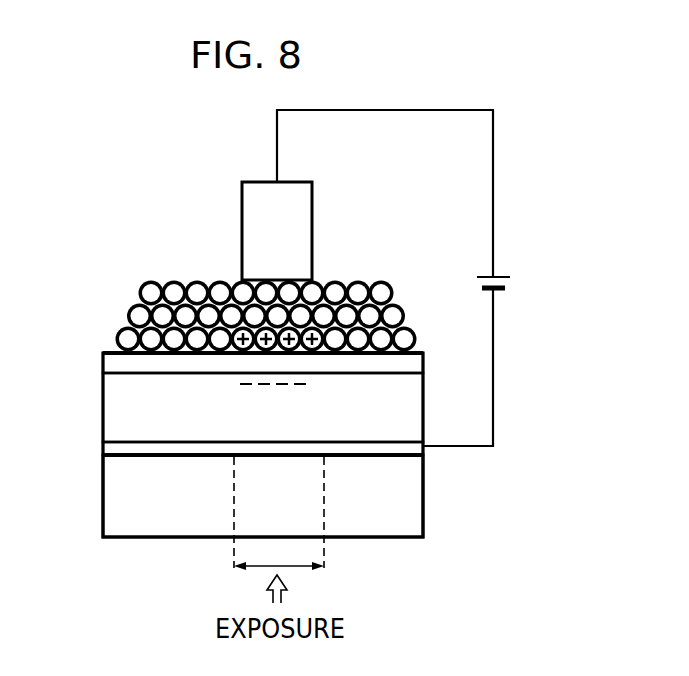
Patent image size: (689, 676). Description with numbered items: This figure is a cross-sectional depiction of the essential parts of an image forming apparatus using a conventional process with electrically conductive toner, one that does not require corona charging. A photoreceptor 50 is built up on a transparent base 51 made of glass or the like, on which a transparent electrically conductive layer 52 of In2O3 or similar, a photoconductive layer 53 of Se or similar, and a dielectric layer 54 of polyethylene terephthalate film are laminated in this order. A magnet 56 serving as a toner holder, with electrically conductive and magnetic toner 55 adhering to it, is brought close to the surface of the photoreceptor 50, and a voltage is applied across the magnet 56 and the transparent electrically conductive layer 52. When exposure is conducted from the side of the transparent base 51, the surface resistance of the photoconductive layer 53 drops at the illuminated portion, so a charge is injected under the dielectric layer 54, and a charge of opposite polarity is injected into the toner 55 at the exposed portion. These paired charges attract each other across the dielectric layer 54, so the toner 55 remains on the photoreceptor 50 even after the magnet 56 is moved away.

The photoreceptor 50 is at (82, 350).
The transparent base 51 is at (408, 497).
The transparent electrically conductive layer 52 is at (408, 440).
The photoconductive layer 53 is at (408, 402).
The dielectric layer 54 is at (420, 355).
The toner 55 is at (380, 293).
The magnet 56 is at (297, 222).